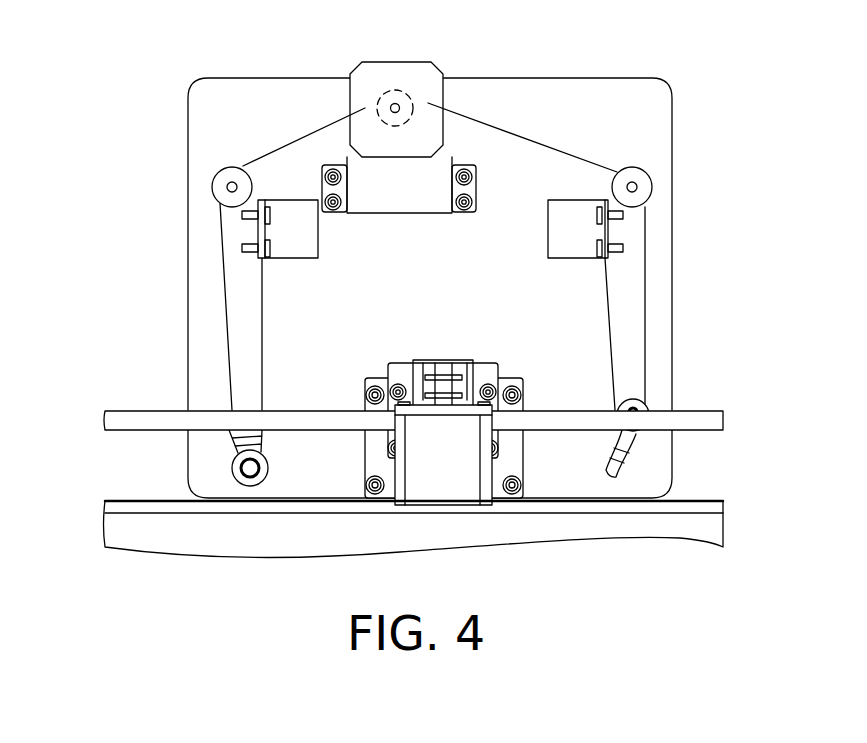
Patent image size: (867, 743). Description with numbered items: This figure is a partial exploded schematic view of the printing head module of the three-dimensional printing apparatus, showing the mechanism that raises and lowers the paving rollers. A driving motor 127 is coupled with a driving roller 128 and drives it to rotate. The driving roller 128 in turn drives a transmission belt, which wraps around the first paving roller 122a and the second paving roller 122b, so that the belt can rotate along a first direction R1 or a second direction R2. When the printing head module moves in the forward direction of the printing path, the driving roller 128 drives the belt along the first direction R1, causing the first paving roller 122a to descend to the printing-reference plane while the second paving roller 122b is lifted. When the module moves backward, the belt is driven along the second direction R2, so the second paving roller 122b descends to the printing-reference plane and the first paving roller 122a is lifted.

The driving motor 127 is at (370, 77).
The driving roller 128 is at (404, 92).
The first direction R1 is at (662, 228).
The second direction R2 is at (200, 228).
The first paving roller 122a is at (238, 467).
The second paving roller 122b is at (640, 400).